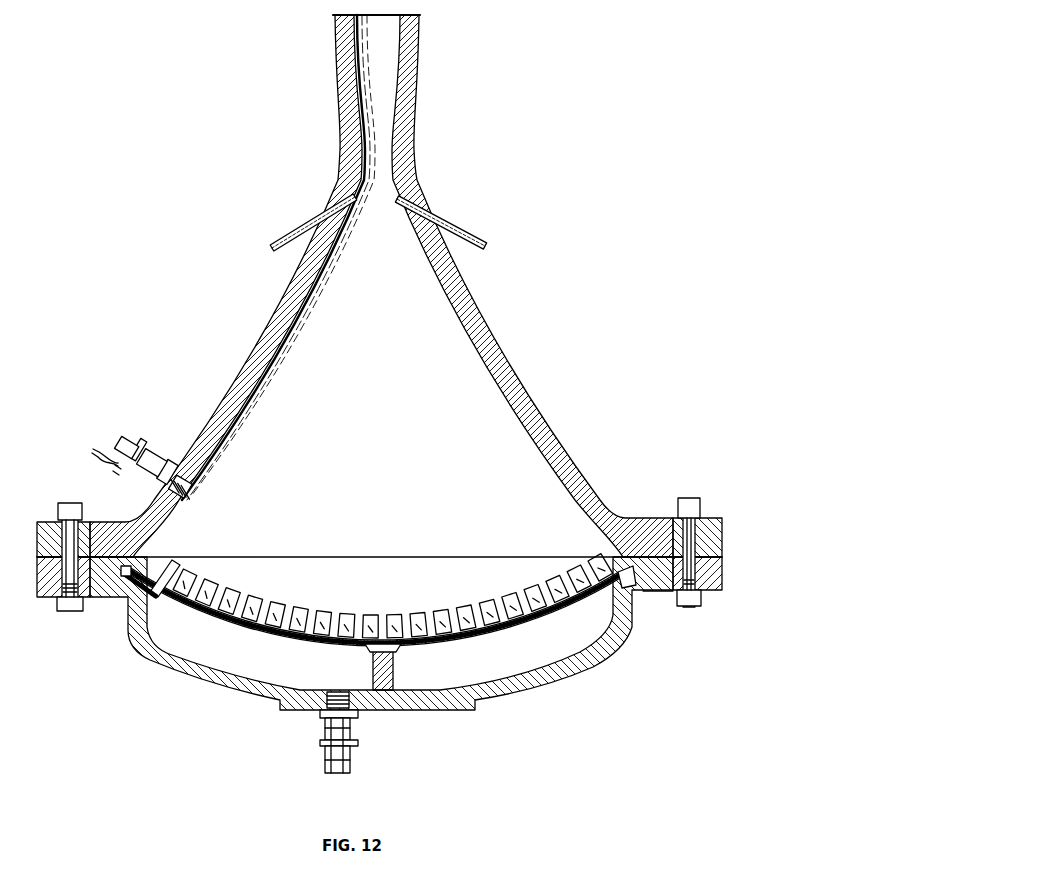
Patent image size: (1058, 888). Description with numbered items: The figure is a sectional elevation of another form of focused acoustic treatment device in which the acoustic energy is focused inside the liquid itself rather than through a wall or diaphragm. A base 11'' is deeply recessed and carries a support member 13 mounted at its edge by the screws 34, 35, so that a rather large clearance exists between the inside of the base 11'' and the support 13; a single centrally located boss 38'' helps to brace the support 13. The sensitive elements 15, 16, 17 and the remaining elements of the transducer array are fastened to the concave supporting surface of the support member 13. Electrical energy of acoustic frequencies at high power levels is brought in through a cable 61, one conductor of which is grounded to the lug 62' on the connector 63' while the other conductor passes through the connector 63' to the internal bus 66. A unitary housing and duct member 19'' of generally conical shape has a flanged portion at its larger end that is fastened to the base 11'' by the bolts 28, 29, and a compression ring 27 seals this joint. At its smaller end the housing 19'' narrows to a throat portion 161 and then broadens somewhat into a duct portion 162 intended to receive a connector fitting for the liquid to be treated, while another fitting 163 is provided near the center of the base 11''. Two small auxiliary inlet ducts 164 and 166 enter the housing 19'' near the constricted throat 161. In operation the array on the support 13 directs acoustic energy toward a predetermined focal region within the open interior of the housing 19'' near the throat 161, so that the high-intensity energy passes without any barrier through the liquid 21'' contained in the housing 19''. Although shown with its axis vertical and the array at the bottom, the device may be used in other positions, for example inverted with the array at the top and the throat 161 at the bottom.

The duct portion 162 is at (413, 43).
The throat portion 161 is at (401, 149).
The auxiliary inlet duct 164 is at (303, 223).
The auxiliary inlet duct 166 is at (455, 225).
The housing and duct member 19'' is at (381, 286).
The liquid 21'' is at (382, 411).
The cable 61 is at (113, 462).
The lug 62' is at (107, 488).
The connector 63' is at (154, 467).
The internal bus 66 is at (190, 526).
The bolt 29 is at (62, 503).
The bolt 28 is at (692, 498).
The compression ring 27 is at (660, 590).
The sensitive element 15 is at (167, 568).
The sensitive element 16 is at (178, 580).
The sensitive element 17 is at (200, 588).
The screw 35 is at (128, 598).
The boss 38'' is at (403, 667).
The screw 34 is at (628, 623).
The support member 13 is at (545, 620).
The base 11'' is at (381, 642).
The fitting 163 is at (353, 740).